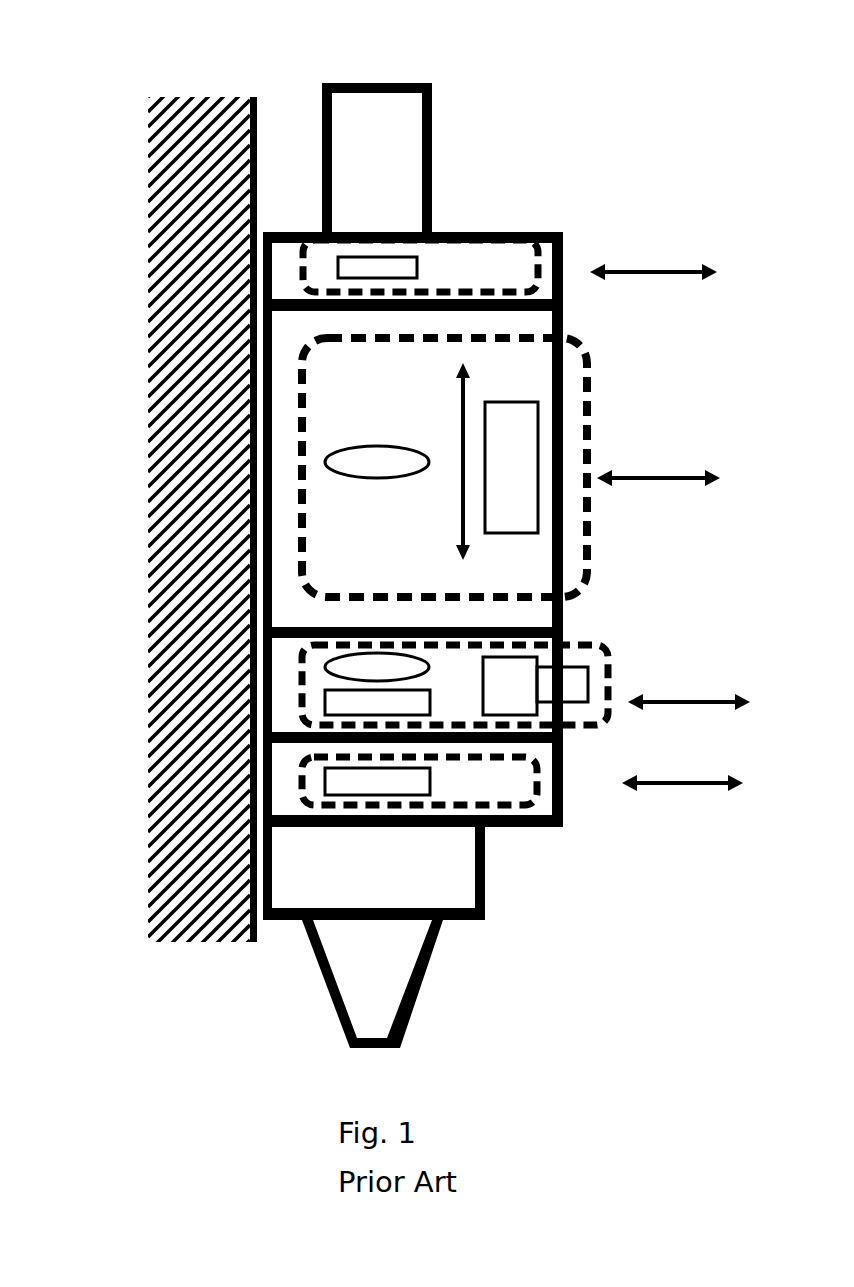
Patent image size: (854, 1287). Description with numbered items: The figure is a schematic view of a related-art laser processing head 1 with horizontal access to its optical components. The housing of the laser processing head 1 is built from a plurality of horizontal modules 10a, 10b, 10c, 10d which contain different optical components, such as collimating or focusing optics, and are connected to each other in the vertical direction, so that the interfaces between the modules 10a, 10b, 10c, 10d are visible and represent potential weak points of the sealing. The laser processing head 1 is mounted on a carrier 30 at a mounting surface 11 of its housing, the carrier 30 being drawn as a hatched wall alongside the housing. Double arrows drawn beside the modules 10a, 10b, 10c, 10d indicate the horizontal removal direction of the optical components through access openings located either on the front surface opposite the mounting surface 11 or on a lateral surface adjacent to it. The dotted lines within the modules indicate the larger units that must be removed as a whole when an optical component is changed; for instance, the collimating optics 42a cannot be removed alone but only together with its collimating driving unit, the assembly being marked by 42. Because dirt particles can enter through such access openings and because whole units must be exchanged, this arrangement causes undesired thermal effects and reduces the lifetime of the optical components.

The laser processing head 1 is at (535, 178).
The carrier 30 is at (175, 112).
The mounting surface 11 is at (258, 270).
The horizontal module 10a is at (563, 232).
The horizontal module 10b is at (563, 322).
The horizontal module 10c is at (563, 630).
The horizontal module 10d is at (563, 800).
The drive element (ellipse) 42 is at (395, 458).
The collimating optics 42a is at (507, 445).